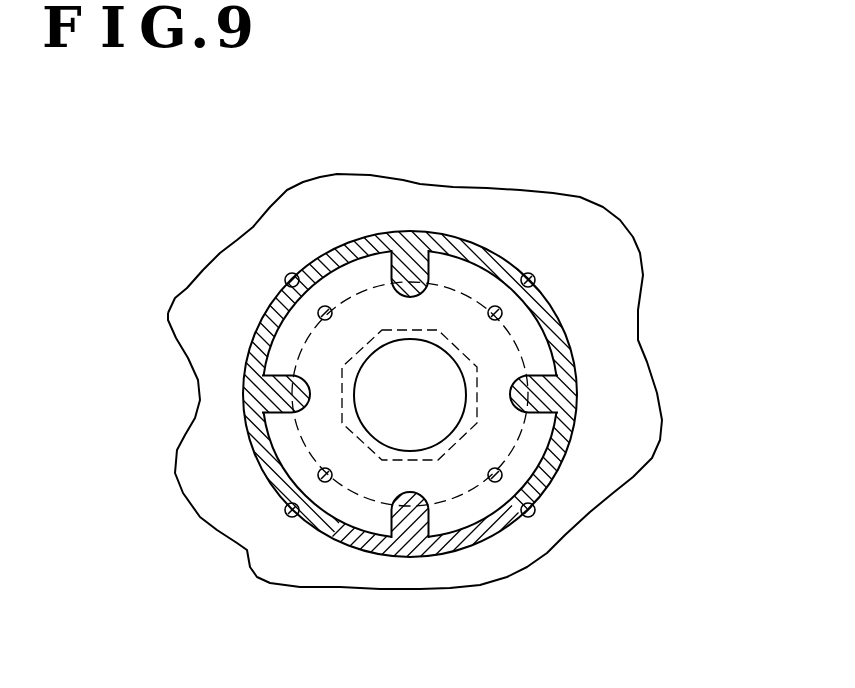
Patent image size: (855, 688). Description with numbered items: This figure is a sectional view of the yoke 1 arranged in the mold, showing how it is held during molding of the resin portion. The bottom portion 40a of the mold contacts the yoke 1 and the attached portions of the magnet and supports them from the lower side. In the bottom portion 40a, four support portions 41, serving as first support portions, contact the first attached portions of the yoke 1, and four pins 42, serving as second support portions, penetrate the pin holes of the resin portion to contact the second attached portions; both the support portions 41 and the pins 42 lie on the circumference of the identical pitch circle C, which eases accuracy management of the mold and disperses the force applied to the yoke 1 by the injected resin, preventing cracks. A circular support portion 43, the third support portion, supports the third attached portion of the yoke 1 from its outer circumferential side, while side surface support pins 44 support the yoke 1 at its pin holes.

The yoke 1 is at (458, 355).
The bottom portion of the mold 40a is at (168, 314).
The support portion 41 is at (265, 381).
The pin 42 is at (318, 312).
The circular support portion 43 is at (566, 458).
The side surface support pin 44 is at (286, 274).
The pitch circle C is at (305, 350).